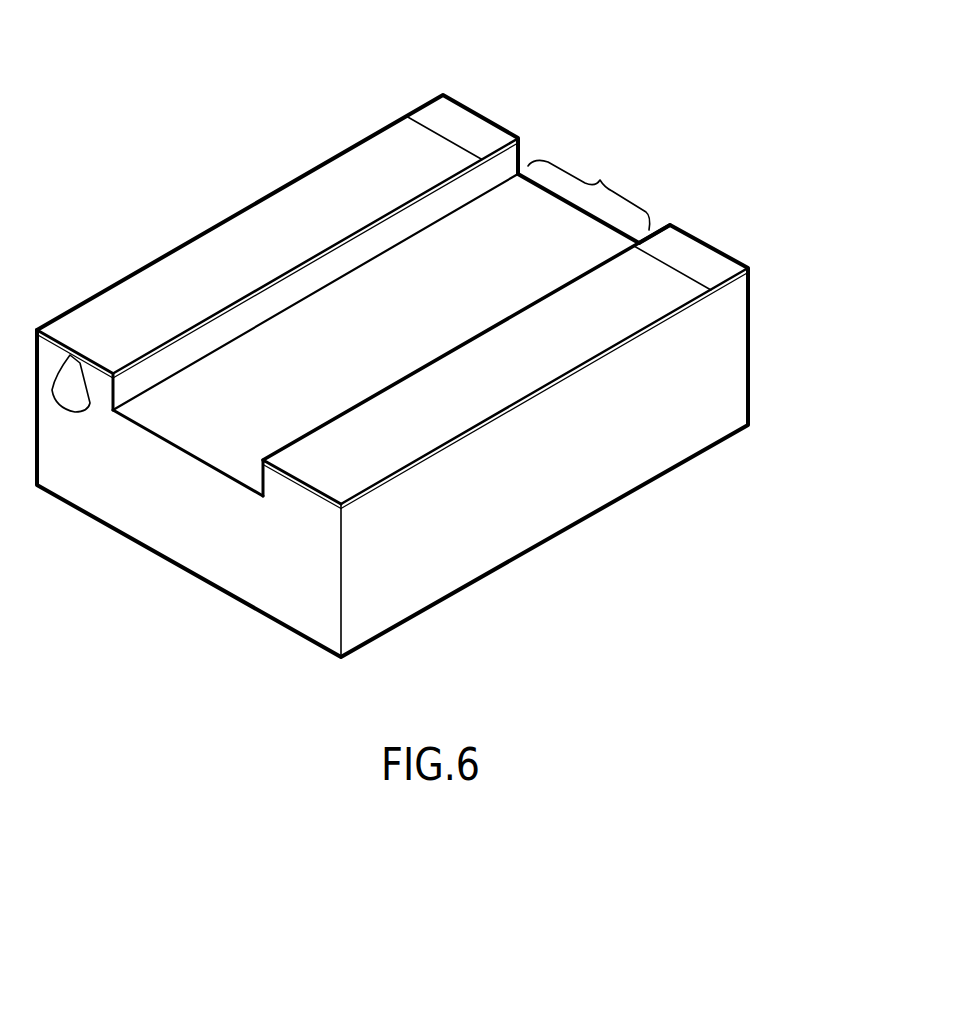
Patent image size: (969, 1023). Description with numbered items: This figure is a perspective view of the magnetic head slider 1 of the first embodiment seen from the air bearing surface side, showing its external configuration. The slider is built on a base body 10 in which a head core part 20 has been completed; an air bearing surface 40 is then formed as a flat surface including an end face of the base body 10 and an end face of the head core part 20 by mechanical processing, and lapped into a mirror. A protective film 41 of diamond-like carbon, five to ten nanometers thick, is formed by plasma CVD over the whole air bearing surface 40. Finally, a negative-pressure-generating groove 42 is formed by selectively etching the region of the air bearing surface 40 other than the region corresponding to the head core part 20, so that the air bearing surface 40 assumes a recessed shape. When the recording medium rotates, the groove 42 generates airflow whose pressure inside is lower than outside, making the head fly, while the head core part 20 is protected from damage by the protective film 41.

The magnetic head slider 1 is at (553, 98).
The base body 10 is at (142, 528).
The head core part 20 is at (73, 397).
The air bearing surface 40 is at (235, 260).
The protective film 41 is at (720, 290).
The negative-pressure-generating groove 42 is at (605, 175).